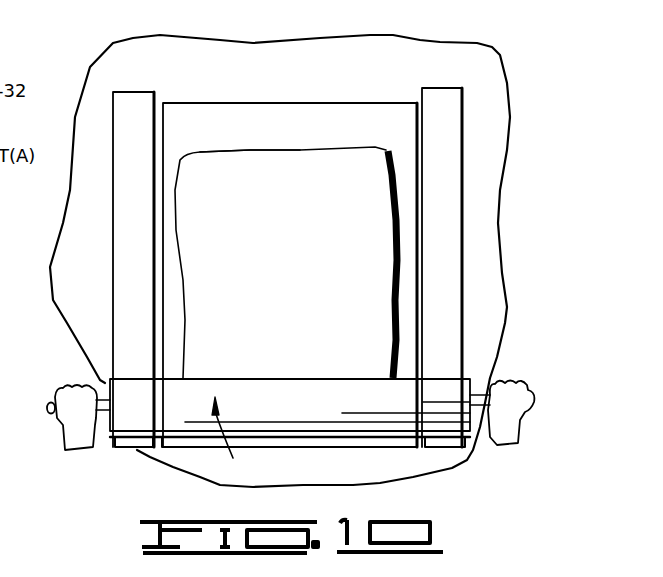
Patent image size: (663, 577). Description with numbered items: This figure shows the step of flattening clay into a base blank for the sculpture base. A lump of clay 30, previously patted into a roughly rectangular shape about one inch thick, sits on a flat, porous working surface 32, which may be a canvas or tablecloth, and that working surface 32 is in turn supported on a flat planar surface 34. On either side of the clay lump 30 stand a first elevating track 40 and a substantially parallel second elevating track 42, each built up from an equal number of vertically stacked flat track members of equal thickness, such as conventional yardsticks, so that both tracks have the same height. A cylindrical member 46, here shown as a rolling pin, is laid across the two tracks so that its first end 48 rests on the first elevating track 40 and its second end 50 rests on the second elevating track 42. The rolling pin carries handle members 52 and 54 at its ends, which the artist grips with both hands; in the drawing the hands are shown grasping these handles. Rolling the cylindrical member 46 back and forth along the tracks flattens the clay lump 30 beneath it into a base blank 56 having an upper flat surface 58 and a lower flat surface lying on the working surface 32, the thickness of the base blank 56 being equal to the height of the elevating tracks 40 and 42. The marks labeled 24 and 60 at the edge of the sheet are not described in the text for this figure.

The sheet 24 is at (257, 261).
The clay lump 30 is at (284, 275).
The working surface 32 is at (348, 111).
The planar surface 34 is at (495, 156).
The first elevating track 40 is at (433, 99).
The second elevating track 42 is at (128, 101).
The cylindrical member 46 is at (233, 458).
The first end 48 is at (395, 390).
The second end 50 is at (104, 382).
The handle member 52 is at (493, 380).
The handle member 54 is at (47, 405).
The base blank 56 is at (200, 162).
The upper flat surface 58 is at (304, 162).
The element 60 is at (11, 47).